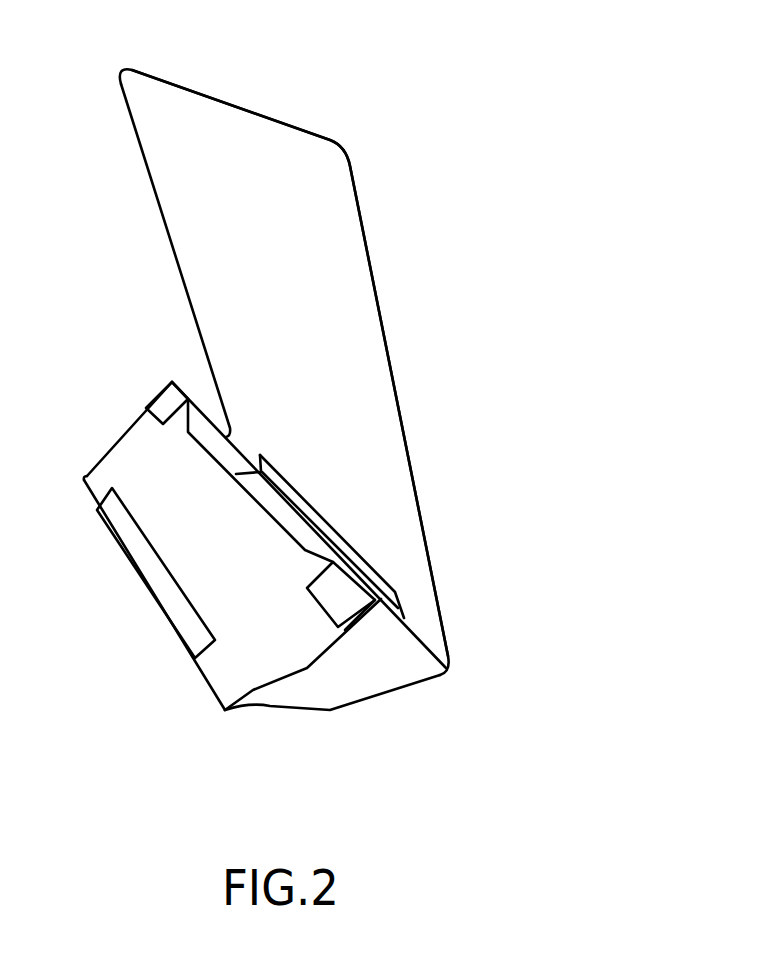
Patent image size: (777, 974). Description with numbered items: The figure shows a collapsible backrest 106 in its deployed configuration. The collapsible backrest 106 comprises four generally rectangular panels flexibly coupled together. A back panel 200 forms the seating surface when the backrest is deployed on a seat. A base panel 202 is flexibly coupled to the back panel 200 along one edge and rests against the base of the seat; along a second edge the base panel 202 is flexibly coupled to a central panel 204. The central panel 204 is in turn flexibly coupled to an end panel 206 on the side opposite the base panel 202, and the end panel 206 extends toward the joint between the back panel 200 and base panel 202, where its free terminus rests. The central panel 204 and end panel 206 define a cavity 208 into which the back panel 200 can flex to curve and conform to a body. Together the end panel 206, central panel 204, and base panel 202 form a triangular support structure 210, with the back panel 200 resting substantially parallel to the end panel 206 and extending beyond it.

The collapsible backrest 106 is at (350, 87).
The back panel 200 is at (341, 174).
The base panel 202 is at (403, 668).
The central panel 204 is at (178, 617).
The end panel 206 is at (187, 400).
The cavity 208 is at (207, 433).
The triangular support structure 210 is at (348, 695).